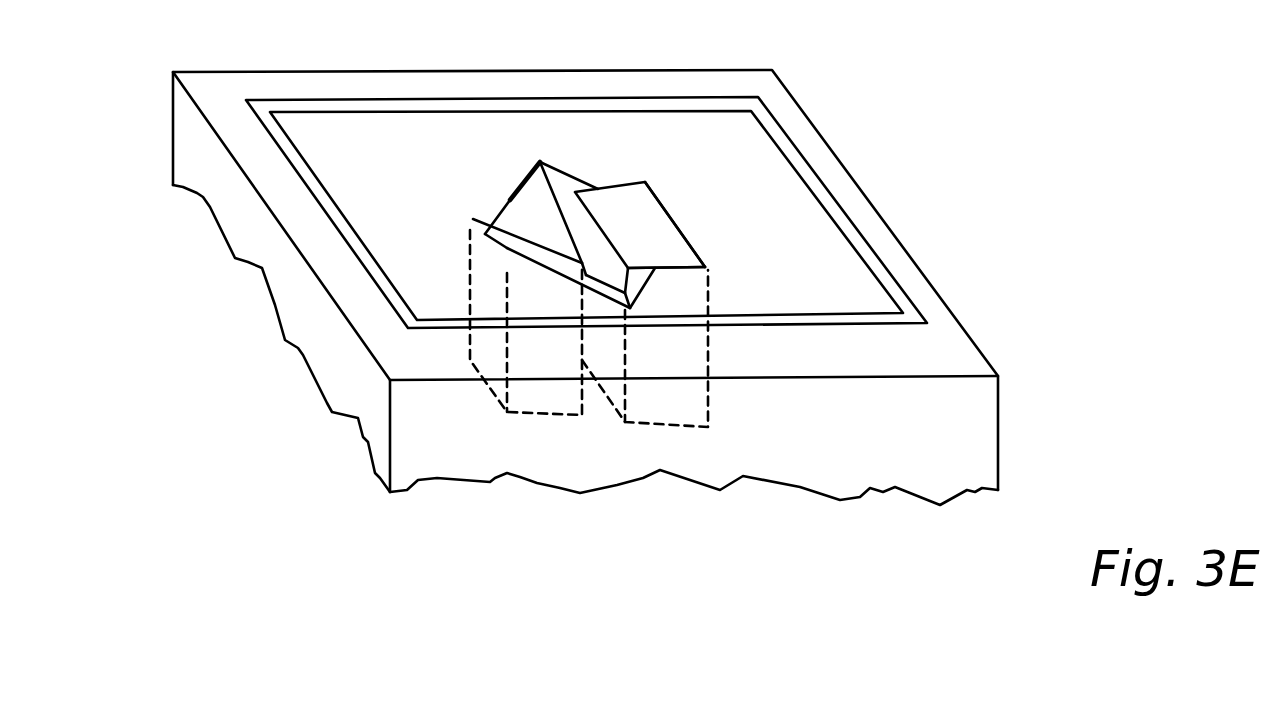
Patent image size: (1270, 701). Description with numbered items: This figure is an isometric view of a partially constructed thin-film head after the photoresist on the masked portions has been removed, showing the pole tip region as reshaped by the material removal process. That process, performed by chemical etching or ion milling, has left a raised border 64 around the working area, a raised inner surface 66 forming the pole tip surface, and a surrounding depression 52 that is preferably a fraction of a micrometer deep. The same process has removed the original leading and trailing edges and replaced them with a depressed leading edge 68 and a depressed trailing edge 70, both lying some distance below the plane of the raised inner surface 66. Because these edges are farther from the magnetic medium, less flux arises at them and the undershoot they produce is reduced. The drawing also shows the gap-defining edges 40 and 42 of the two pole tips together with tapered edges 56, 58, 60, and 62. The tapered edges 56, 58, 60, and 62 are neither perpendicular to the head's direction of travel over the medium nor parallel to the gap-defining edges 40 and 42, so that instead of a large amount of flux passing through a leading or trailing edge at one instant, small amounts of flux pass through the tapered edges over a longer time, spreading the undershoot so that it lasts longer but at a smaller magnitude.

The depression 52 is at (343, 148).
The raised border 64 is at (937, 353).
The tapered edge 56 is at (503, 207).
The tapered edge 58 is at (530, 262).
The gap-defining edge 40 is at (547, 194).
The gap-defining edge 42 is at (600, 212).
The tapered edge 60 is at (655, 205).
The depressed trailing edge 70 is at (670, 210).
The raised inner surface 66 is at (542, 157).
The tapered edge 62 is at (662, 265).
The depressed leading edge 68 is at (487, 263).